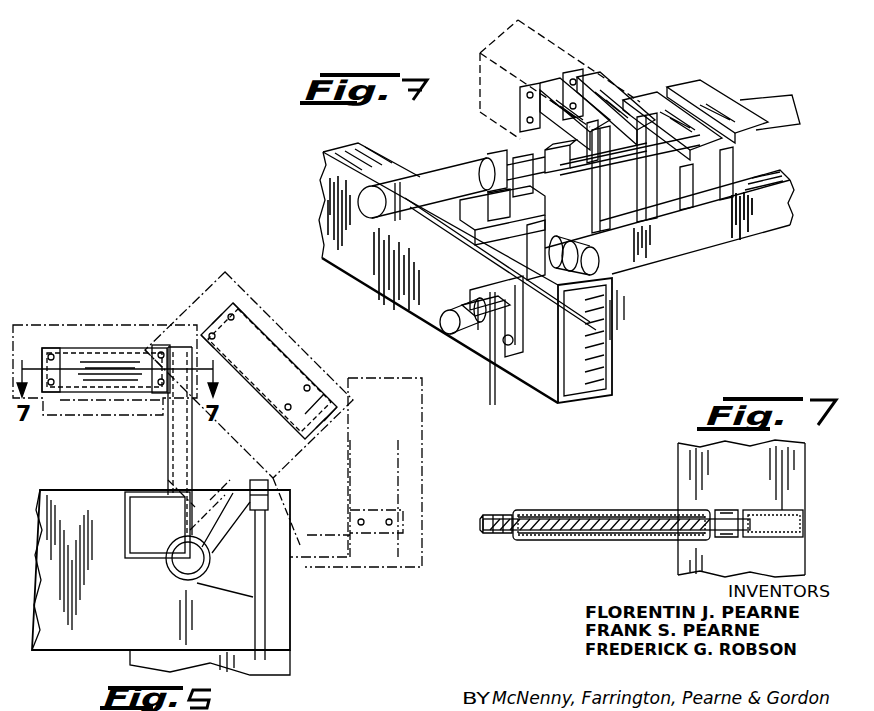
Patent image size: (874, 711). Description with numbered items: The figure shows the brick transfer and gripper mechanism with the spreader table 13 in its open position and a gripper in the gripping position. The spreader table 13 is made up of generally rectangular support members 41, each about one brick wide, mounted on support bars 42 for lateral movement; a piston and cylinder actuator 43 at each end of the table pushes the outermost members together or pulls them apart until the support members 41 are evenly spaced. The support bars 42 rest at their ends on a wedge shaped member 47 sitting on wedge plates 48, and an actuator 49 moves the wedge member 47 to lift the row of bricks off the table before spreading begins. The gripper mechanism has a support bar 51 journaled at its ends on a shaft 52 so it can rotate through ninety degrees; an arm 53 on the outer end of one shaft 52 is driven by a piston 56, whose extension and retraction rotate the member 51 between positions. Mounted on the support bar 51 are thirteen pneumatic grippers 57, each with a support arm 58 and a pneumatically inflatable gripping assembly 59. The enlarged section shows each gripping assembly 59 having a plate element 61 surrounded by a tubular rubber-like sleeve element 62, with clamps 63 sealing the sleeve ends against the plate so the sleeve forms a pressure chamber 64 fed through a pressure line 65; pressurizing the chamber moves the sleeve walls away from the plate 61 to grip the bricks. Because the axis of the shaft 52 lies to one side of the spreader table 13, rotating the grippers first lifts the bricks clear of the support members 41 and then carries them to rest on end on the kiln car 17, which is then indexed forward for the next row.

In FIG. 5, the spreader table 13 is at (716, 83).
In FIG. 6, the spreader table 13 is at (95, 405).
In FIG. 6, the kiln car 17 is at (436, 566).
In FIG. 5, the support members 41 is at (643, 100).
In FIG. 6, the support members 41 is at (112, 413).
In FIG. 5, the support bars 42 is at (746, 88).
In FIG. 5, the piston and cylinder actuator 43 is at (440, 172).
In FIG. 5, the wedge shaped member 47 is at (462, 214).
In FIG. 5, the wedge plates 48 is at (478, 226).
In FIG. 5, the actuator 49 is at (596, 262).
In FIG. 5, the support bar 51 is at (723, 250).
In FIG. 5, the shaft 52 is at (442, 330).
In FIG. 6, the shaft 52 is at (178, 568).
In FIG. 5, the arm 53 is at (463, 305).
In FIG. 5, the piston 56 is at (494, 408).
In FIG. 6, the piston 56 is at (252, 621).
In FIG. 5, the pneumatic grippers 57 is at (582, 82).
In FIG. 6, the pneumatic grippers 57 is at (88, 345).
In FIG. 6, the support arm 58 is at (192, 440).
In FIG. 5, the pneumatically inflatable gripping assembly 59 is at (608, 96).
In FIG. 6, the pneumatically inflatable gripping assembly 59 is at (143, 350).
In FIG. 7, the pneumatically inflatable gripping assembly 59 is at (568, 541).
In FIG. 7, the plate element 61 is at (641, 518).
In FIG. 7, the tubular rubber-like sleeve element 62 is at (652, 541).
In FIG. 7, the clamps 63 is at (512, 514).
In FIG. 7, the pressure chamber 64 is at (571, 515).
In FIG. 7, the pressure line 65 is at (745, 512).